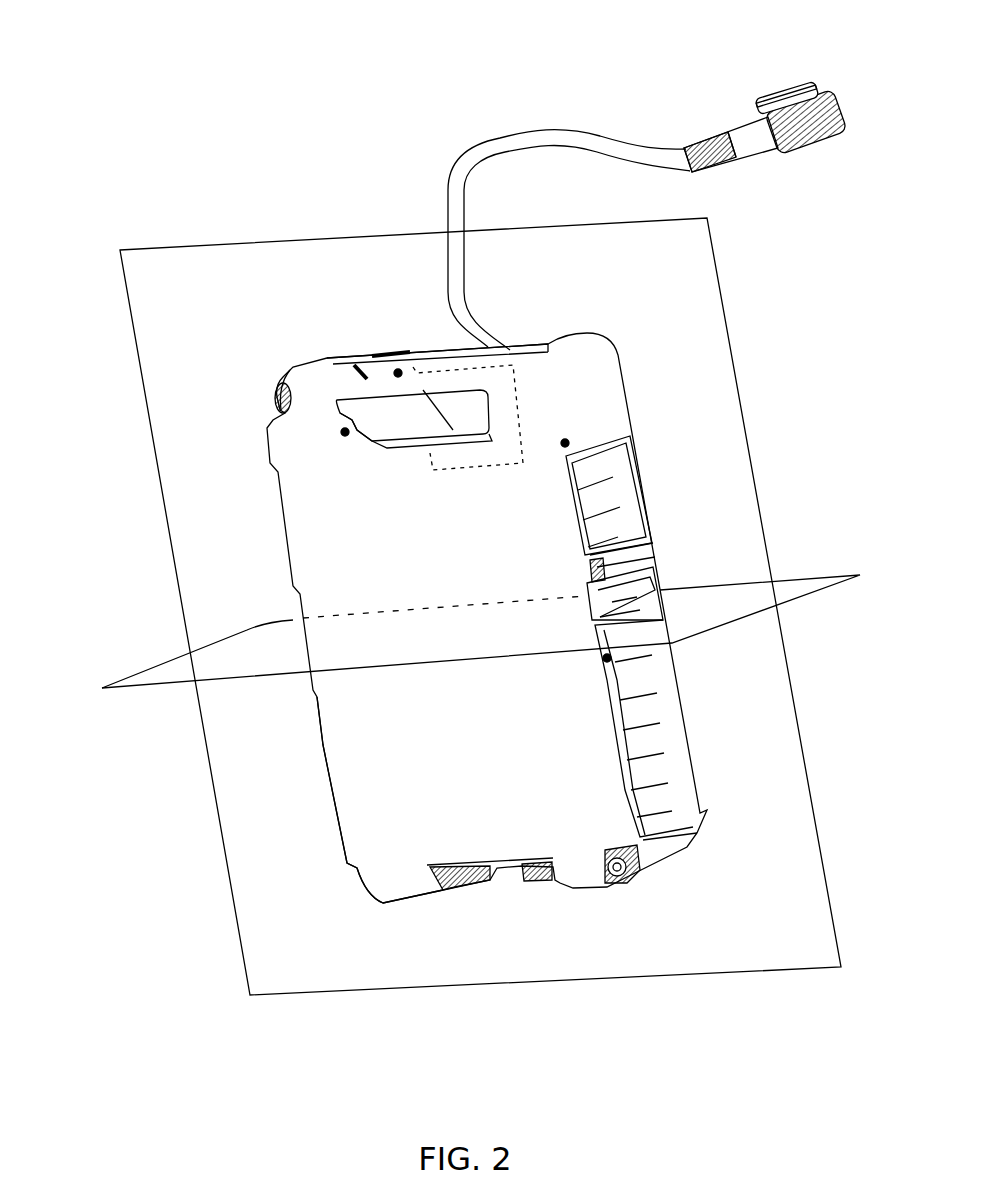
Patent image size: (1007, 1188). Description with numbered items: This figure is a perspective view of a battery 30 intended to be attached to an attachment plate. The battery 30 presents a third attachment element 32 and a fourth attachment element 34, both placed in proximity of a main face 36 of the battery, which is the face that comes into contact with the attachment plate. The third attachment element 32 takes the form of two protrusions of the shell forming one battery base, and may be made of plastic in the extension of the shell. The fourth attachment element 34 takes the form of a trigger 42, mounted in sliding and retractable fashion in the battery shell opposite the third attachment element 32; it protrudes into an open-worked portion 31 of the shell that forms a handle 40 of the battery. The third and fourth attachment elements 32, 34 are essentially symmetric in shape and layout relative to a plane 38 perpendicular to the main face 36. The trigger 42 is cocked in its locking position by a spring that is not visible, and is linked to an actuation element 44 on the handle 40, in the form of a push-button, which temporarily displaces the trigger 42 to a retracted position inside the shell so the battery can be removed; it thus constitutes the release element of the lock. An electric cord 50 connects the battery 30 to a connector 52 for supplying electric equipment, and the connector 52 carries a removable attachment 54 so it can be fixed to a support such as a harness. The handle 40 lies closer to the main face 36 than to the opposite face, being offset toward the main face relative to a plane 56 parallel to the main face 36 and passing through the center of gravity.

The battery 30 is at (705, 729).
The open-worked portion 31 is at (455, 418).
The third attachment element 32 is at (530, 878).
The fourth attachment element 34 is at (413, 453).
The main face 36 is at (438, 728).
The plane 38 is at (797, 588).
The handle 40 is at (363, 377).
The trigger 42 is at (378, 448).
The actuation element 44 is at (400, 345).
The electric cord 50 is at (575, 131).
The connector 52 is at (758, 136).
The removable attachment 54 is at (785, 90).
The plane 56 is at (168, 292).